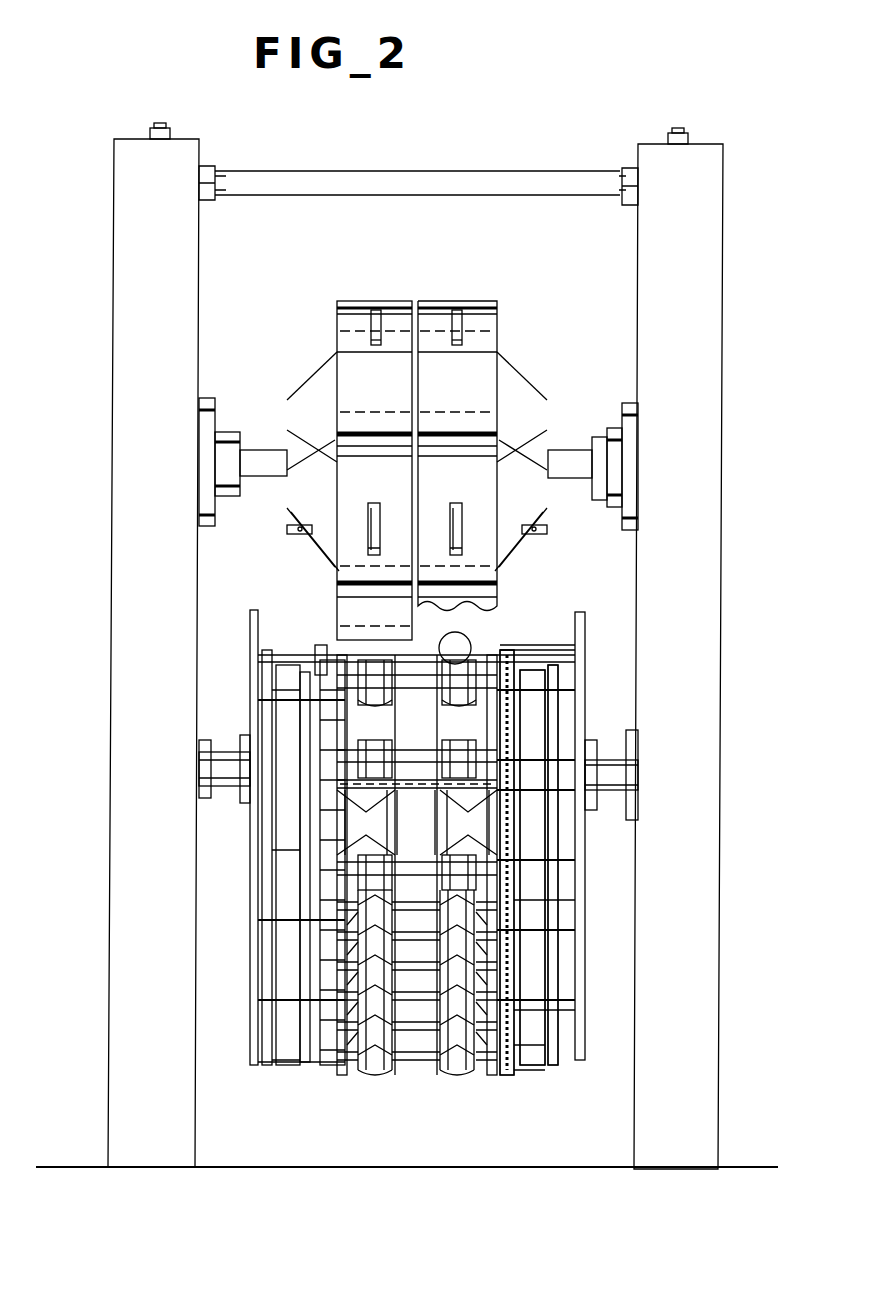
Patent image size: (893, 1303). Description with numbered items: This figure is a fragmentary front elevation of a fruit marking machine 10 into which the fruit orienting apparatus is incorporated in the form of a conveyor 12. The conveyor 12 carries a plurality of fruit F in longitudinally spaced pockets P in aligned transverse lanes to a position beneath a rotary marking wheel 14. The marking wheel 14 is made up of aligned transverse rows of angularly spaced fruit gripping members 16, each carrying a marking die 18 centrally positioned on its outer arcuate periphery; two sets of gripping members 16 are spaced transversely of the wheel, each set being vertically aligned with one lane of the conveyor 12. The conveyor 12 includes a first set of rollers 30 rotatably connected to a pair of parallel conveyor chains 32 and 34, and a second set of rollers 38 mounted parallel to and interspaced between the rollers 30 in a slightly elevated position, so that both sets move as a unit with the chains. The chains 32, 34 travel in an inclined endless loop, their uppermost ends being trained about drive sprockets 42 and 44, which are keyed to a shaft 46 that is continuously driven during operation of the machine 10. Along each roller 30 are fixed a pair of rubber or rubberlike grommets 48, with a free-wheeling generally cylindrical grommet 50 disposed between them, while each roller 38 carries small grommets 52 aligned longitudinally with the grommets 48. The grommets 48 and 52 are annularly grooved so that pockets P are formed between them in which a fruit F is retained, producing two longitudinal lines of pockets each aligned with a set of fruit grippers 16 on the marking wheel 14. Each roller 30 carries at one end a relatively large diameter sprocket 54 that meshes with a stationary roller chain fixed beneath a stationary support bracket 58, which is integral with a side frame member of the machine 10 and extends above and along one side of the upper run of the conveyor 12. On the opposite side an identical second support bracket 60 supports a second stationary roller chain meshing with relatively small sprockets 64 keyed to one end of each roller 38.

The fruit marking machine 10 is at (742, 313).
The conveyor 12 is at (262, 940).
The rotary marking wheel 14 is at (504, 316).
The fruit gripping members 16 is at (338, 338).
The marking die 18 is at (455, 309).
The first set of rollers 30 is at (515, 828).
The conveyor chain 32 is at (298, 878).
The conveyor chain 34 is at (552, 880).
The second set of rollers 38 is at (518, 1045).
The drive sprocket 42 is at (285, 780).
The drive sprocket 44 is at (542, 760).
The shaft 46 is at (612, 773).
The grommets 48 is at (382, 818).
The free-wheeling grommet 50 is at (432, 818).
The small grommets 52 is at (446, 742).
The sprocket 54 is at (310, 836).
The stationary support bracket 58 is at (322, 647).
The second support bracket 60 is at (510, 642).
The small sprockets 64 is at (520, 975).
The fruit F is at (466, 638).
The pockets P is at (365, 655).